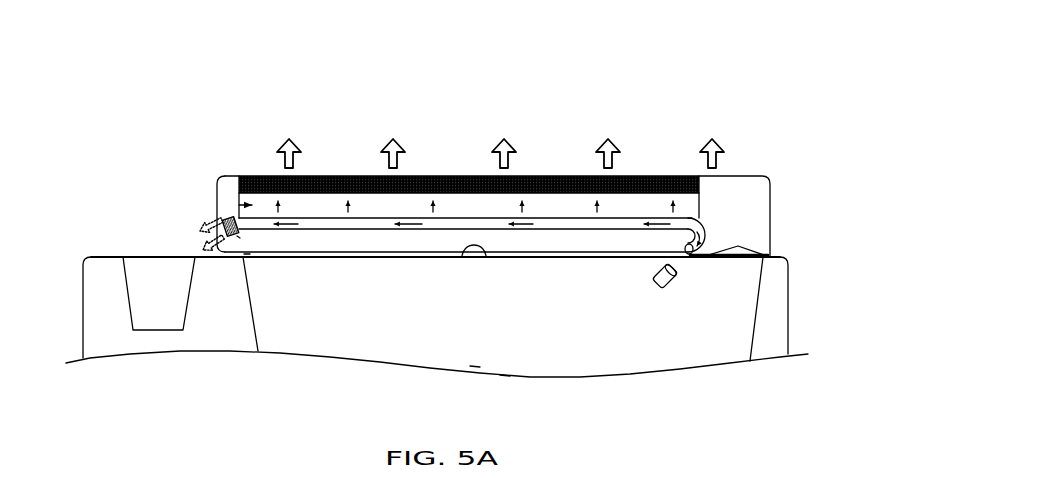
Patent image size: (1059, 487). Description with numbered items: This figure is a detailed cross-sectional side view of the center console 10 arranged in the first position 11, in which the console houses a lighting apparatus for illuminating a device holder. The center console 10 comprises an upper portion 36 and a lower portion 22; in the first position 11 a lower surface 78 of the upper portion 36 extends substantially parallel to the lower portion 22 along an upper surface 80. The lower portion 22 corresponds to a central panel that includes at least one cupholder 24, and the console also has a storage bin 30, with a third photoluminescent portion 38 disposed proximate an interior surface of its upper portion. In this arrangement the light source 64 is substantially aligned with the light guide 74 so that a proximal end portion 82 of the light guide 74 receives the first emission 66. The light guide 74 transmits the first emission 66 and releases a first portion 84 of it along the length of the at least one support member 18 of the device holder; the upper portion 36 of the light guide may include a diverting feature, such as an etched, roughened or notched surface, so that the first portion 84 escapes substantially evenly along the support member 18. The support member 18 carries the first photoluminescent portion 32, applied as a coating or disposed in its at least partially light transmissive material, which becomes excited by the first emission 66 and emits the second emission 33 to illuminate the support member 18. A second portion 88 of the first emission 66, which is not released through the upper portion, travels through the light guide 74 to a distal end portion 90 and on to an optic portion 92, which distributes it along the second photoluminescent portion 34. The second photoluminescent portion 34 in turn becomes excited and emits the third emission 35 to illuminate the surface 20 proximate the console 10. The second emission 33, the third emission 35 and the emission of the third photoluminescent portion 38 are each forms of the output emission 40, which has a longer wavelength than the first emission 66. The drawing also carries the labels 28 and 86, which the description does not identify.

The center console 10 is at (476, 173).
The first position 11 is at (676, 60).
The support member 18 is at (259, 180).
The surface 20 is at (100, 254).
The lower portion 22 is at (100, 295).
The cupholder 24 is at (177, 313).
The substrate 28 is at (461, 346).
The storage bin 30 is at (514, 346).
The first photoluminescent portion 32 is at (633, 176).
The second emission 33 is at (292, 159).
The second photoluminescent portion 34 is at (220, 215).
The third emission 35 is at (209, 244).
The upper portion 36 is at (222, 178).
The third photoluminescent portion 38 is at (741, 264).
The output emission 40 is at (457, 165).
The light source 64 is at (666, 287).
The first emission 66 is at (352, 205).
The light guide 74 is at (562, 229).
The lower surface 78 is at (325, 257).
The upper surface 80 is at (463, 256).
The proximal end portion 82 is at (712, 224).
The first portion 84 is at (222, 216).
The chamber 86 is at (466, 214).
The second portion 88 is at (286, 288).
The distal end portion 90 is at (253, 238).
The optic portion 92 is at (247, 256).